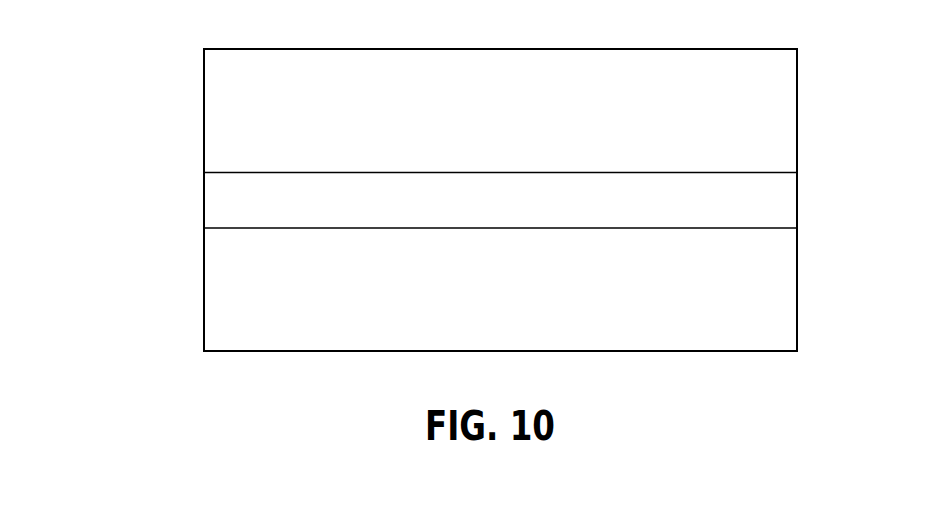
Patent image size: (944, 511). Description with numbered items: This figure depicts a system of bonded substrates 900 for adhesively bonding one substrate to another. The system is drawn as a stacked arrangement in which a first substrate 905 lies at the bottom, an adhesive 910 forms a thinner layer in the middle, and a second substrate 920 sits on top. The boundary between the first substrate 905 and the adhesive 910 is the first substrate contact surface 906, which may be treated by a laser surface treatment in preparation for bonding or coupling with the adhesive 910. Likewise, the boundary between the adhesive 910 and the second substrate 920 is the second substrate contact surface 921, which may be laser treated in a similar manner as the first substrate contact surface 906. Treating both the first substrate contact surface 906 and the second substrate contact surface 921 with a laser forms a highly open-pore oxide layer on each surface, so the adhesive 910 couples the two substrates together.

The system of bonded substrates 900 is at (105, 63).
The first substrate 905 is at (262, 337).
The first substrate contact surface 906 is at (595, 230).
The adhesive 910 is at (203, 202).
The second substrate 920 is at (772, 95).
The second substrate contact surface 921 is at (665, 172).